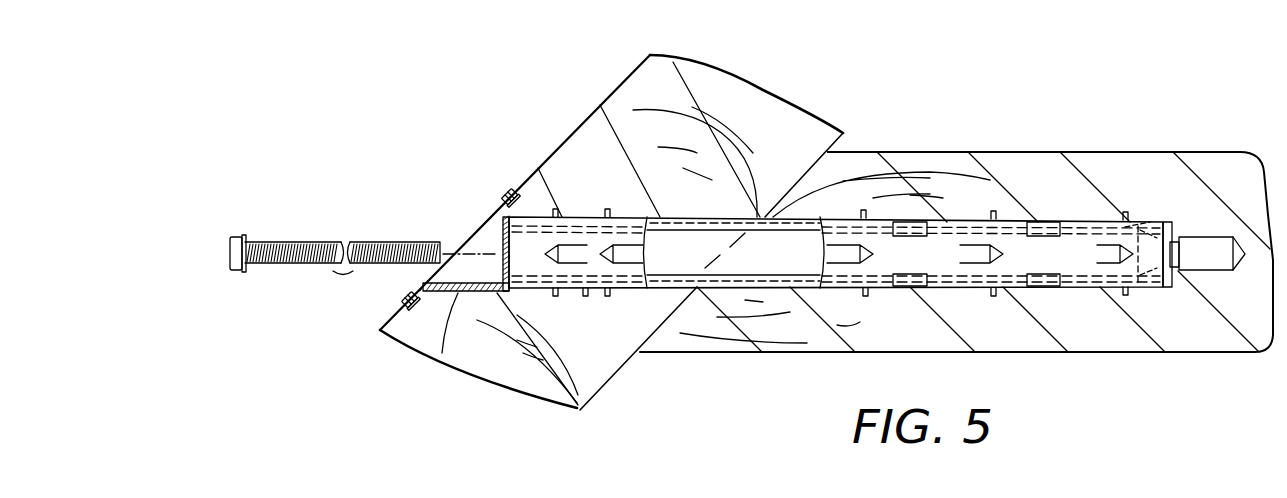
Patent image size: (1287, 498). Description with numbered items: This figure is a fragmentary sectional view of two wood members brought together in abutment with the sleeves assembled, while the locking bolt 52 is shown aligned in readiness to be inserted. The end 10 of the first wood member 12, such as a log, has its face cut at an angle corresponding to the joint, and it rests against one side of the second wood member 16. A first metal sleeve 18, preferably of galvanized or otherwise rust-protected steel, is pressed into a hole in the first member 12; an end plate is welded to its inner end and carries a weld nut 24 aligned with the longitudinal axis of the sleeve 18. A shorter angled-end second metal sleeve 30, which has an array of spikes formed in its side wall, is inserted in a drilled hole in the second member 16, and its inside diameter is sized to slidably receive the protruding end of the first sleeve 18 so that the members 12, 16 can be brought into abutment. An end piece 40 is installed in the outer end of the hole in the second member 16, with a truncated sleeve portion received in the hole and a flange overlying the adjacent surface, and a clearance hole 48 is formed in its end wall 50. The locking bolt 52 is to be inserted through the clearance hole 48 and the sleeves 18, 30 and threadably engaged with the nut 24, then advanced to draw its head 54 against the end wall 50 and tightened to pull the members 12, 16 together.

The end 10 is at (843, 153).
The first wood member 12 is at (977, 121).
The second wood member 16 is at (558, 140).
The first metal sleeve 18 is at (1065, 222).
The weld nut 24 is at (1176, 237).
The second metal sleeve 30 is at (588, 293).
The end piece 40 is at (495, 227).
The clearance hole 48 is at (498, 258).
The end wall 50 is at (413, 305).
The locking bolt 52 is at (293, 240).
The head 54 is at (228, 240).